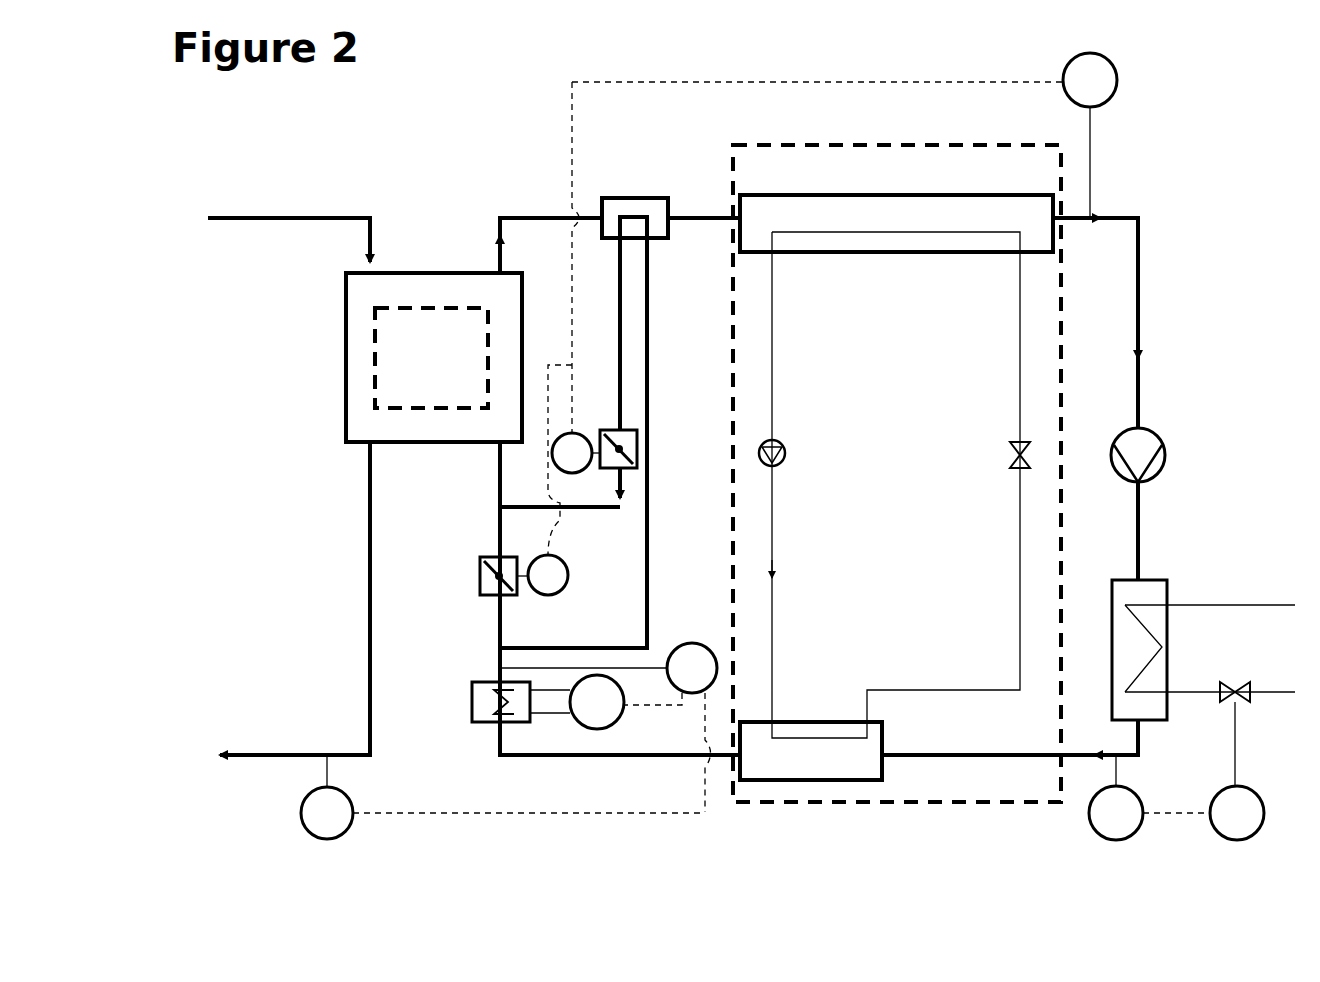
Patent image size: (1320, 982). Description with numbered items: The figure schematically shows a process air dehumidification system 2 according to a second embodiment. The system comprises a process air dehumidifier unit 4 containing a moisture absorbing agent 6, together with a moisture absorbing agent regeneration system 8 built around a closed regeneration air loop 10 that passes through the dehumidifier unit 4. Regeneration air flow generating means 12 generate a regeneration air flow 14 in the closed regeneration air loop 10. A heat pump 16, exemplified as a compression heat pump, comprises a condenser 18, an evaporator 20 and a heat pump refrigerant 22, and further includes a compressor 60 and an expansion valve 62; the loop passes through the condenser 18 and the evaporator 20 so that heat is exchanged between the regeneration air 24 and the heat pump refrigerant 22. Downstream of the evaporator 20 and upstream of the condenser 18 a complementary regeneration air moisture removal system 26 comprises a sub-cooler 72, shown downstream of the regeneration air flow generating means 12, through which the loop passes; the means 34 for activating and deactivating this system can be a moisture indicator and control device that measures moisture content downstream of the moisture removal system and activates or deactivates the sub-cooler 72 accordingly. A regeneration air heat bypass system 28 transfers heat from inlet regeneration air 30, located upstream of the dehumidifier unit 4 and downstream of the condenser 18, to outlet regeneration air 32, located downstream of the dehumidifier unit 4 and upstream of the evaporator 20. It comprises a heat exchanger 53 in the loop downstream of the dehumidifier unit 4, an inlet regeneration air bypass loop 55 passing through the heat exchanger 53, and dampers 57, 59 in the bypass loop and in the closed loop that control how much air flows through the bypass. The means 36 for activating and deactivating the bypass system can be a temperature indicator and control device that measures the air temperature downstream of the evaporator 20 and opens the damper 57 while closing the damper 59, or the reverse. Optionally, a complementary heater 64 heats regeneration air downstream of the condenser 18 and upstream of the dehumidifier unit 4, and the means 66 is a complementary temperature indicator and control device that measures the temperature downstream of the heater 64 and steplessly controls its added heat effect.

The process air dehumidification system 2 is at (448, 152).
The process air dehumidifier unit 4 is at (345, 328).
The moisture absorbing agent 6 is at (380, 376).
The moisture absorbing agent regeneration system 8 is at (732, 838).
The closed regeneration air loop 10 is at (640, 758).
The regeneration air flow generating means 12 is at (1162, 462).
The regeneration air flow 14 is at (498, 240).
The heat pump 16 is at (965, 806).
The condenser 18 is at (826, 766).
The evaporator 20 is at (978, 206).
The heat pump refrigerant 22 is at (960, 690).
The regeneration air 24 is at (683, 758).
The complementary regeneration air moisture removal system 26 is at (1192, 846).
The regeneration air heat bypass system 28 is at (474, 516).
The inlet regeneration air 30 is at (499, 635).
The outlet regeneration air 32 is at (527, 216).
The means arranged to activate and deactivate the complementary regeneration air moi 34 is at (1098, 838).
The means arranged to activate and deactivate the regeneration air heat bypass syste 36 is at (1115, 75).
The heat exchanger 53 is at (658, 212).
The inlet regeneration air bypass loop 55 is at (648, 388).
The damper 57 is at (612, 432).
The damper 59 is at (488, 584).
The compressor 60 is at (786, 455).
The expansion valve 62 is at (1012, 447).
The complementary heater 64 is at (486, 705).
The means arranged to activate and deactivate the complementary heater 66 is at (699, 645).
The sub-cooler 72 is at (1168, 588).